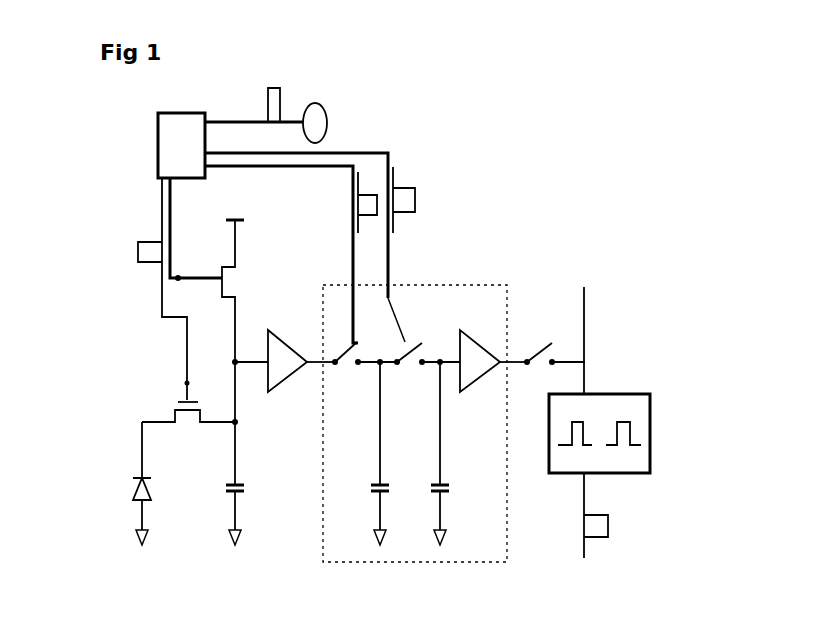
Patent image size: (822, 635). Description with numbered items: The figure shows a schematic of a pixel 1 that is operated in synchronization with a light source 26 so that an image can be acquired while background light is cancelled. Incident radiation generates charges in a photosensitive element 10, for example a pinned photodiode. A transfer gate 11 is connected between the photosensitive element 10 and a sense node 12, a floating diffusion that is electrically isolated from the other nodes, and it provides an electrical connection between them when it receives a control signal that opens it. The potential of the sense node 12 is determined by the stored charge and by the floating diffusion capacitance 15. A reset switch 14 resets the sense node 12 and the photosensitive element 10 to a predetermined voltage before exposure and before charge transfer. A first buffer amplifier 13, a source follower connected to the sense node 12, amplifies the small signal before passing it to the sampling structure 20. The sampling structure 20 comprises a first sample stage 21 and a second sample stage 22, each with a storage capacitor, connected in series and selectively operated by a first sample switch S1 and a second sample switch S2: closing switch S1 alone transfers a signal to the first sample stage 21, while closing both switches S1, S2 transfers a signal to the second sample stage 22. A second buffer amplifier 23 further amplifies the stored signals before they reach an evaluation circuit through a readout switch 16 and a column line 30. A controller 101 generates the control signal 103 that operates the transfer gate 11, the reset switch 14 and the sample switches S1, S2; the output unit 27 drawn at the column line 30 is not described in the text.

The pixel 1 is at (150, 175).
The photosensitive element 10 is at (150, 505).
The transfer gate 11 is at (178, 393).
The sense node 12 is at (240, 430).
The first buffer amplifier 13 is at (285, 328).
The reset switch 14 is at (218, 260).
The floating diffusion capacitance 15 is at (243, 502).
The readout switch 16 is at (543, 337).
The sampling structure 20 is at (508, 510).
The first sample stage 21 is at (370, 487).
The second sample stage 22 is at (456, 490).
The second buffer amplifier 23 is at (462, 332).
The light source 26 is at (328, 117).
The output unit 27 is at (650, 420).
The column line 30 is at (583, 285).
The controller 101 is at (205, 45).
The control signal 103 is at (373, 44).
The first sample switch S1 is at (347, 335).
The second sample switch S2 is at (417, 337).